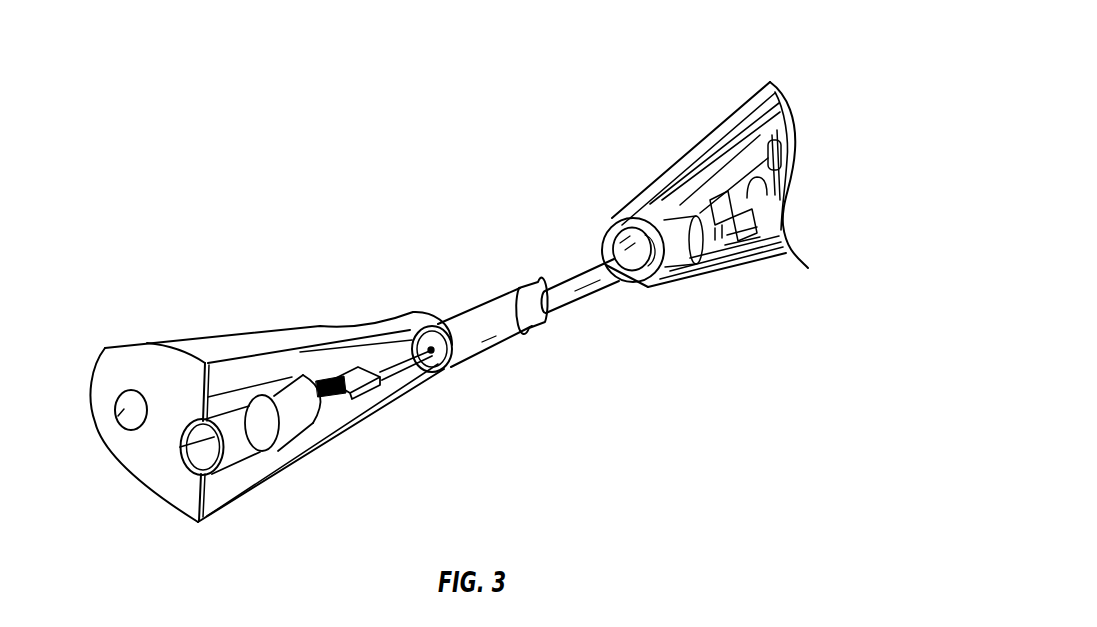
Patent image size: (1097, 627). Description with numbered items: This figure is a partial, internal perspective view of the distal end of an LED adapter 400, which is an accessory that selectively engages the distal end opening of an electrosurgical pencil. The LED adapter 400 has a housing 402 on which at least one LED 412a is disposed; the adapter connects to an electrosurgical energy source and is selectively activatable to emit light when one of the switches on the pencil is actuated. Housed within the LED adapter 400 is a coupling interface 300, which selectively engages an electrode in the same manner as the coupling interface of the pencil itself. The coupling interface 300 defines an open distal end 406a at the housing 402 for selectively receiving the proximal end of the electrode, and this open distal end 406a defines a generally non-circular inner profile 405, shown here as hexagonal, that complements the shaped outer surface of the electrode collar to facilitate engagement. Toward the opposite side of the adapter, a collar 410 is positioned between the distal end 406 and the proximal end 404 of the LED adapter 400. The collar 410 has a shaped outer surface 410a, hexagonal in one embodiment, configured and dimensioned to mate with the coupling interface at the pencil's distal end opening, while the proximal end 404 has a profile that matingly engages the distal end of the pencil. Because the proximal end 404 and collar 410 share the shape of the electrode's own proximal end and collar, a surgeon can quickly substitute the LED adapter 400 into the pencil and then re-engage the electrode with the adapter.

The LED adapter 400 is at (198, 270).
The housing 402 is at (293, 330).
The proximal end 404 is at (567, 292).
The inner profile 405 is at (200, 462).
The distal end 406 is at (128, 444).
The open distal end 406a is at (190, 470).
The collar 410 is at (497, 337).
The shaped outer surface 410a is at (524, 286).
The LED 412a is at (122, 406).
The coupling interface 300 is at (356, 406).